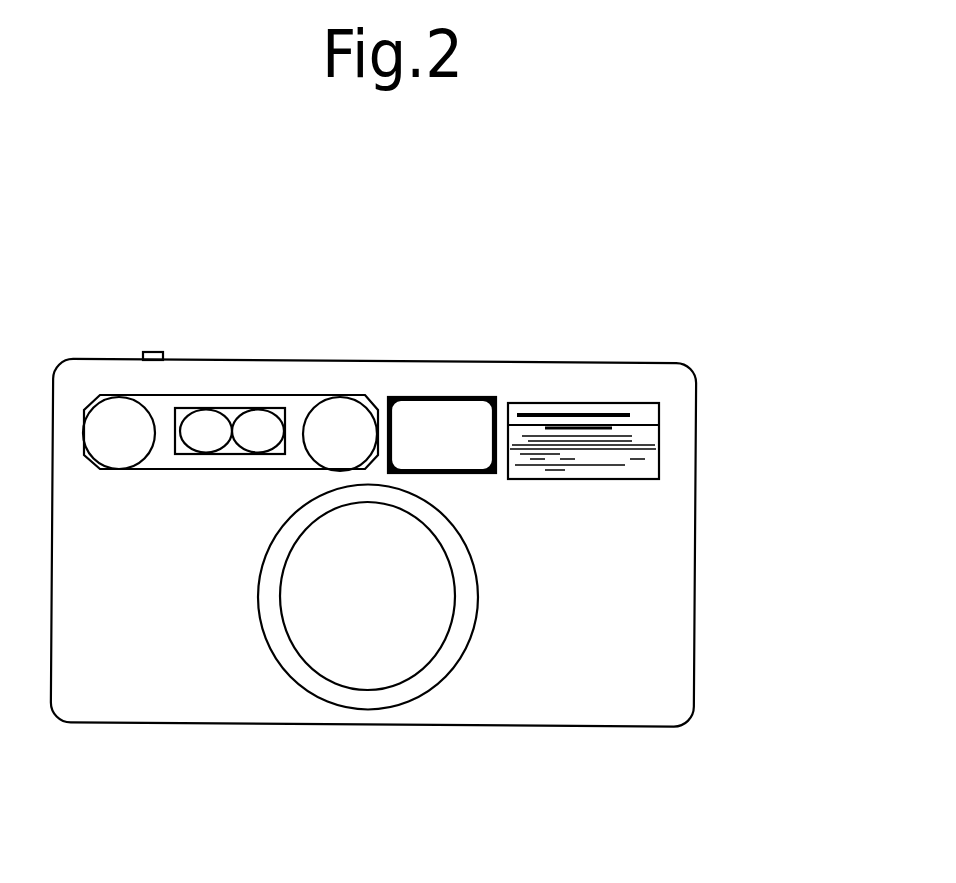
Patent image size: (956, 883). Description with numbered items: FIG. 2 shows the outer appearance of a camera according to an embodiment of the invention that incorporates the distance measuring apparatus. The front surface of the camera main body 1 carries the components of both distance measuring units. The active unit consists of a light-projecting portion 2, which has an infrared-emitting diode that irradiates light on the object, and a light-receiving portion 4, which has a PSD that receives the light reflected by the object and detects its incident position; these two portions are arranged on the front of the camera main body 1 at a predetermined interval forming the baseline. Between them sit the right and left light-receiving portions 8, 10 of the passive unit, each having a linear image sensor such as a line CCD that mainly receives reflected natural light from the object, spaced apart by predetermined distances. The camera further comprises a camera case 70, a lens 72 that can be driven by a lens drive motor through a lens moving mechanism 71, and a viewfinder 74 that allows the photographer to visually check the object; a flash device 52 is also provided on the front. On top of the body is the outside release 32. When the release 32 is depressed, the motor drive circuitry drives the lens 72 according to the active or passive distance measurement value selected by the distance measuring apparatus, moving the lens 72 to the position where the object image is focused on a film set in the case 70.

The camera main body 1 is at (710, 398).
The light-projecting portion 2 is at (120, 408).
The light-receiving portion 4 is at (345, 408).
The light-receiving portion 8 is at (203, 425).
The light-receiving portion 10 is at (253, 428).
The outside release 32 is at (155, 352).
The flash device 52 is at (582, 403).
The camera case 70 is at (696, 493).
The lens moving mechanism 71 is at (405, 687).
The lens 72 is at (360, 678).
The viewfinder 74 is at (442, 408).